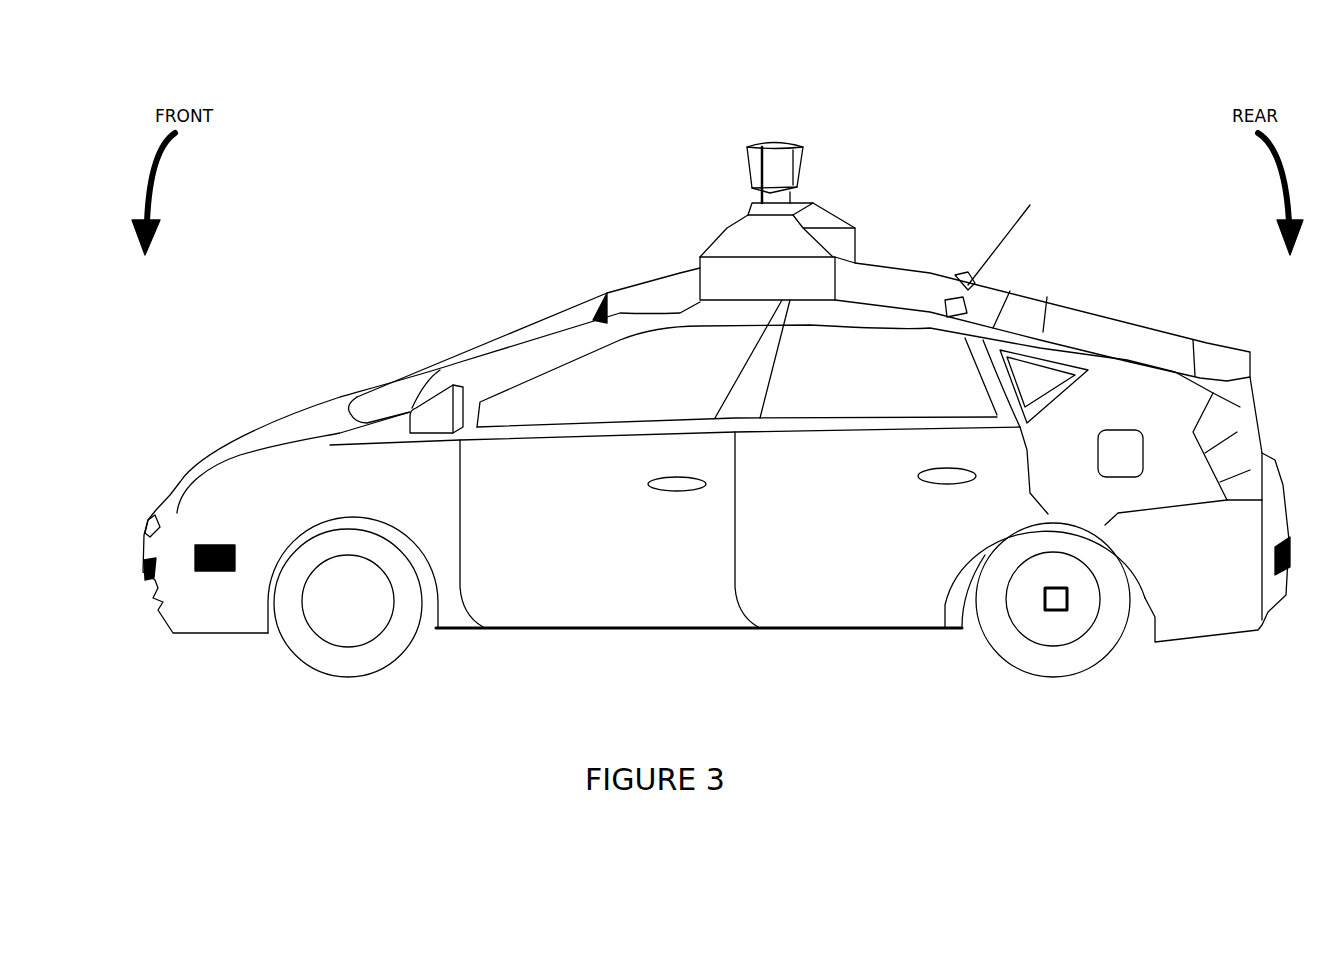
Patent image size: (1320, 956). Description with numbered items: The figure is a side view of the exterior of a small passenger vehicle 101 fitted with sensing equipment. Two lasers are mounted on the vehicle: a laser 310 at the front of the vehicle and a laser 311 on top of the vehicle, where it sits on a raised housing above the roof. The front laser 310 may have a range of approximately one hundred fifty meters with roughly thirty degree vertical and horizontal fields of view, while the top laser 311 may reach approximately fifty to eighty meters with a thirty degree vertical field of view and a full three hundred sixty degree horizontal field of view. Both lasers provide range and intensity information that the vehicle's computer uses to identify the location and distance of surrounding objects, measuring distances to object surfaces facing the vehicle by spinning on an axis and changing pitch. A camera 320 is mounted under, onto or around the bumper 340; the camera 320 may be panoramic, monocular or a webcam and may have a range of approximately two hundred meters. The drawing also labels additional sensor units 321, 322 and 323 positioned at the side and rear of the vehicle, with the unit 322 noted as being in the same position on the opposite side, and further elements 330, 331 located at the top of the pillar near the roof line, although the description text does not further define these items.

The passenger vehicle 101 is at (410, 91).
The laser 310 is at (145, 527).
The laser 311 is at (750, 158).
The camera 320 is at (157, 598).
The side radar unit 321 is at (218, 572).
The side radar unit (opposite side) 322 is at (215, 558).
The rear bumper radar unit 323 is at (1290, 648).
The camera 330 is at (593, 316).
The camera 331 is at (600, 308).
The bumper 340 is at (522, 350).